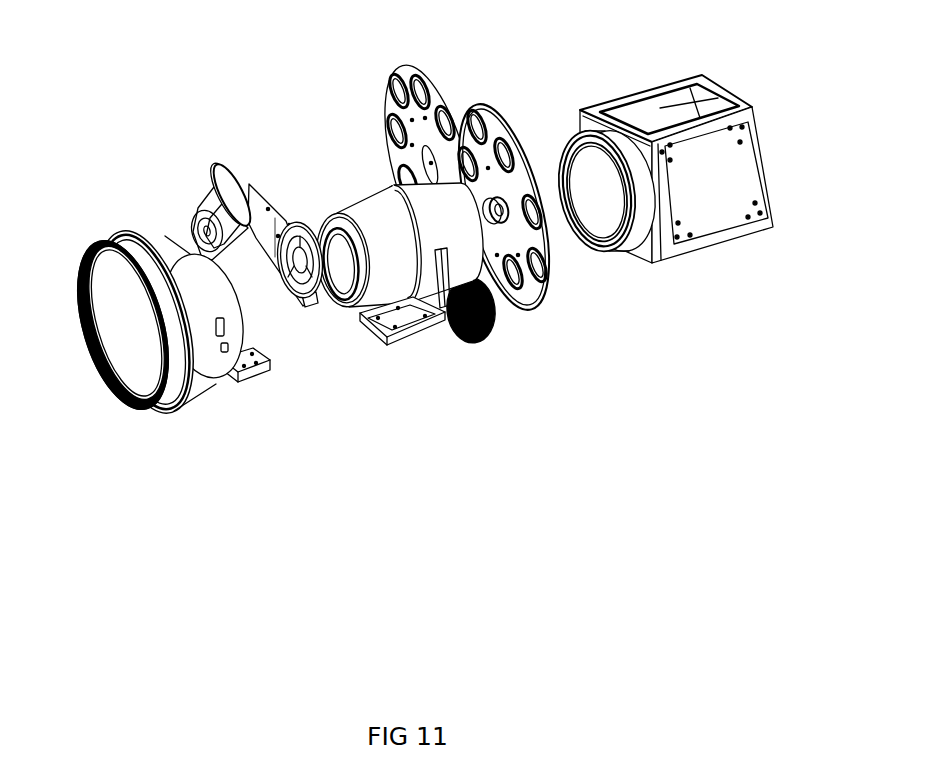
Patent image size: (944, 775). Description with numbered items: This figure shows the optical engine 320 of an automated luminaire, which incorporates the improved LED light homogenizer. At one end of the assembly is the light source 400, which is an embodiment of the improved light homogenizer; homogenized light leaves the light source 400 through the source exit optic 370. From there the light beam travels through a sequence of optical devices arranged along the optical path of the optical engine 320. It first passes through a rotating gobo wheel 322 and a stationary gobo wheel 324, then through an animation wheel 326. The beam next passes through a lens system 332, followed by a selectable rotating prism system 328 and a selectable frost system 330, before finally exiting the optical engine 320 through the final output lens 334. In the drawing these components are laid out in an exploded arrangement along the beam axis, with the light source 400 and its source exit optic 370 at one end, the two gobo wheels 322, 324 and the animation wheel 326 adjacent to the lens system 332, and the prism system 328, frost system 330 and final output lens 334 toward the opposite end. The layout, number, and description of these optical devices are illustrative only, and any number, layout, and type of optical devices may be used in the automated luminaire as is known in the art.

The optical engine 320 is at (330, 70).
The rotating gobo wheel 322 is at (497, 120).
The stationary gobo wheel 324 is at (438, 100).
The animation wheel 326 is at (473, 342).
The selectable rotating prism system 328 is at (285, 217).
The selectable frost system 330 is at (228, 170).
The lens system 332 is at (360, 325).
The final output lens 334 is at (112, 314).
The source exit optic 370 is at (602, 238).
The light source 400 is at (743, 163).